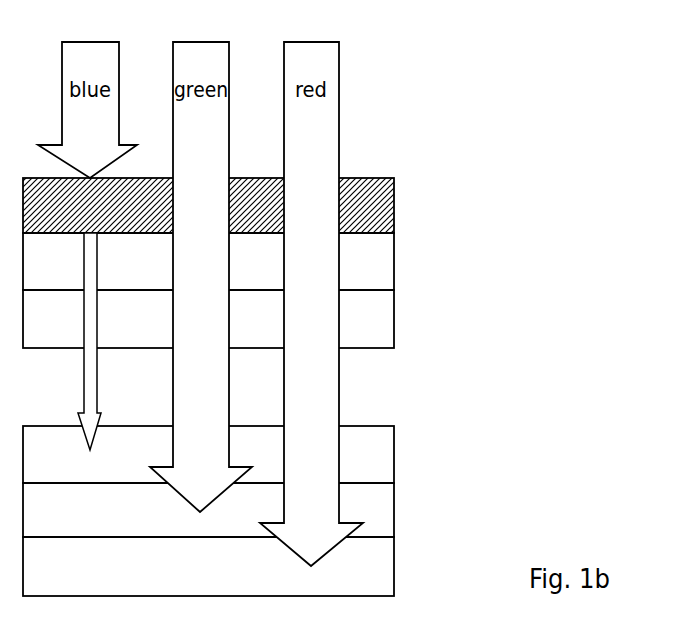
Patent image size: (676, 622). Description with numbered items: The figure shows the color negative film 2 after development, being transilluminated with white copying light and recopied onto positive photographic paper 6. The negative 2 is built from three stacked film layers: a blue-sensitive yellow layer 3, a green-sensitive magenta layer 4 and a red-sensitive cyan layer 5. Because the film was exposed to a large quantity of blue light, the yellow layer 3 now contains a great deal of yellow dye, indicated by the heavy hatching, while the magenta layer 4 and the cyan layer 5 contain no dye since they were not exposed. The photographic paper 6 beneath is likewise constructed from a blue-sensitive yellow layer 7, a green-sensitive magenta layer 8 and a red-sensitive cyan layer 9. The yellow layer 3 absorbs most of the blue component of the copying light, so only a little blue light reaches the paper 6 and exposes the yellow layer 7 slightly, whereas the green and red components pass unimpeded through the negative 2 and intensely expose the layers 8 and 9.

The color negative film 2 is at (240, 228).
The blue-sensitive yellow layer 3 is at (394, 192).
The green-sensitive magenta layer 4 is at (394, 254).
The red-sensitive cyan layer 5 is at (394, 303).
The positive photographic paper 6 is at (240, 476).
The blue-sensitive yellow layer 7 is at (378, 448).
The green-sensitive magenta layer 8 is at (378, 511).
The red-sensitive cyan layer 9 is at (378, 561).